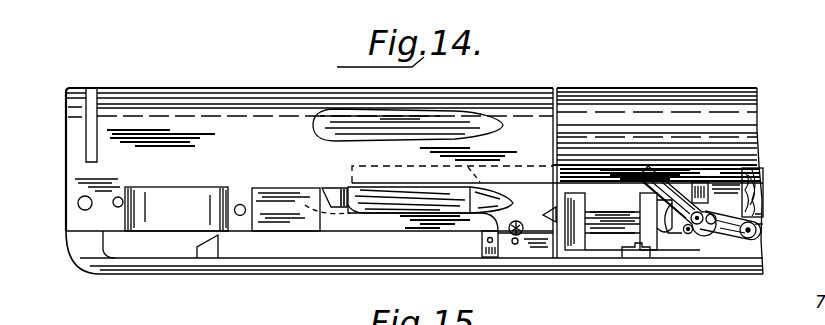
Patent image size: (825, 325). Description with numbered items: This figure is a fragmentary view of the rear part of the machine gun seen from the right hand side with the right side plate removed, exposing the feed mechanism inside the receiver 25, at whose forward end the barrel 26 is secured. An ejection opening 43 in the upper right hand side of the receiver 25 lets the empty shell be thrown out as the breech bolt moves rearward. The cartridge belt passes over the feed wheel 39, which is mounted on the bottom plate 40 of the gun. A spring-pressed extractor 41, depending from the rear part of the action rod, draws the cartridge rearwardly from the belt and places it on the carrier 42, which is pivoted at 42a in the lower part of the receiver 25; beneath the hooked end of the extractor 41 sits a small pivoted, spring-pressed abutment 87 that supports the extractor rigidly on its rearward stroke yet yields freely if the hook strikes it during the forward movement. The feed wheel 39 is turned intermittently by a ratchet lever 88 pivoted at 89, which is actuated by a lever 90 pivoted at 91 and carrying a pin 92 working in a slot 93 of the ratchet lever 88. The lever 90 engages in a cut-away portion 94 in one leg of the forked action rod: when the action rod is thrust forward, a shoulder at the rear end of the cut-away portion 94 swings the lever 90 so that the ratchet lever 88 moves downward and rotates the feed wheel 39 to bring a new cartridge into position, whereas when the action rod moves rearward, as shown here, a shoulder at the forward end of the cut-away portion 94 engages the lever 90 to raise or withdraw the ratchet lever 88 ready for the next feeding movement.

The receiver 25 is at (237, 103).
The barrel 26 is at (670, 83).
The feed wheel 39 is at (612, 232).
The bottom plate 40 is at (547, 268).
The extractor 41 is at (317, 190).
The carrier 42 is at (367, 222).
The pivot 42a is at (240, 216).
The ejection opening 43 is at (443, 122).
The spring pressed abutment 87 is at (513, 222).
The ratchet lever 88 is at (713, 232).
The pivot 89 is at (748, 238).
The lever 90 is at (733, 155).
The pivot 91 is at (687, 232).
The pin 92 is at (697, 234).
The slot 93 is at (763, 218).
The cut-away portion 94 is at (623, 172).